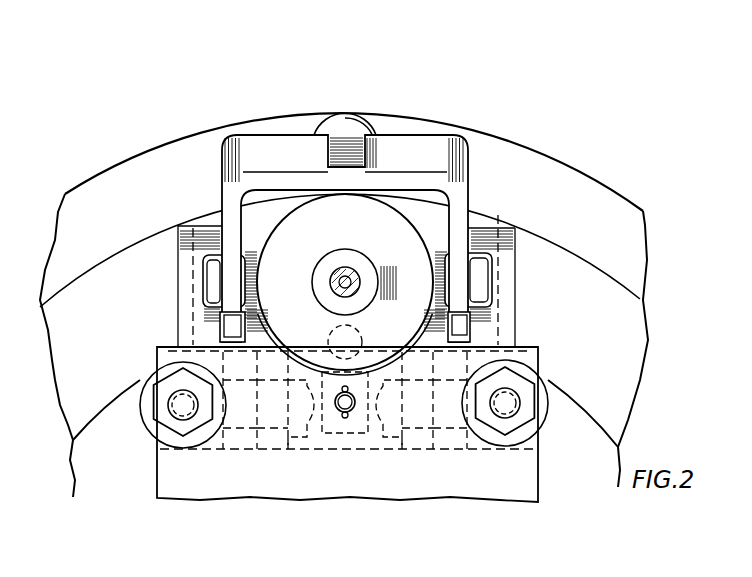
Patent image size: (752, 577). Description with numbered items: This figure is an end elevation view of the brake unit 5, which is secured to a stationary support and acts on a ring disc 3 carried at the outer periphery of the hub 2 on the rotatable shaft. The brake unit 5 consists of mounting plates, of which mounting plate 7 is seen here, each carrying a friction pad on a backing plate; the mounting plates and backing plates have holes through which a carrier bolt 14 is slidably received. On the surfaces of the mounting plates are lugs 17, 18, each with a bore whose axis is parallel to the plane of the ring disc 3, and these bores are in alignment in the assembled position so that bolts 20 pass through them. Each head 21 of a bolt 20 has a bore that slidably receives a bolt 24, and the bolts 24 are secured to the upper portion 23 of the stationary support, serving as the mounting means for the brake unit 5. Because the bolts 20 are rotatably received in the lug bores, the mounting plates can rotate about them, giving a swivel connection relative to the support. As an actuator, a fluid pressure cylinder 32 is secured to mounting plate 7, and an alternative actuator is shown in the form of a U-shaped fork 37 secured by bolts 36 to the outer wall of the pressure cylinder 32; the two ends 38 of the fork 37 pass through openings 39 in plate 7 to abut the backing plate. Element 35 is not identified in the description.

The hub 2 is at (519, 163).
The ring disc 3 is at (583, 398).
The brake unit 5 is at (161, 277).
The mounting plate 7 is at (508, 242).
The carrier bolt 14 is at (352, 413).
The lug 17 is at (240, 442).
The lug 18 is at (270, 443).
The bolt 20 is at (297, 435).
The head 21 is at (150, 413).
The upper portion 23 is at (527, 487).
The bolt 24 is at (183, 422).
The fluid pressure cylinder 32 is at (300, 213).
The axle 35 is at (342, 268).
The bolt 36 is at (220, 268).
The U-shaped fork 37 is at (398, 147).
The end of fork 38 is at (230, 322).
The opening 39 is at (218, 337).